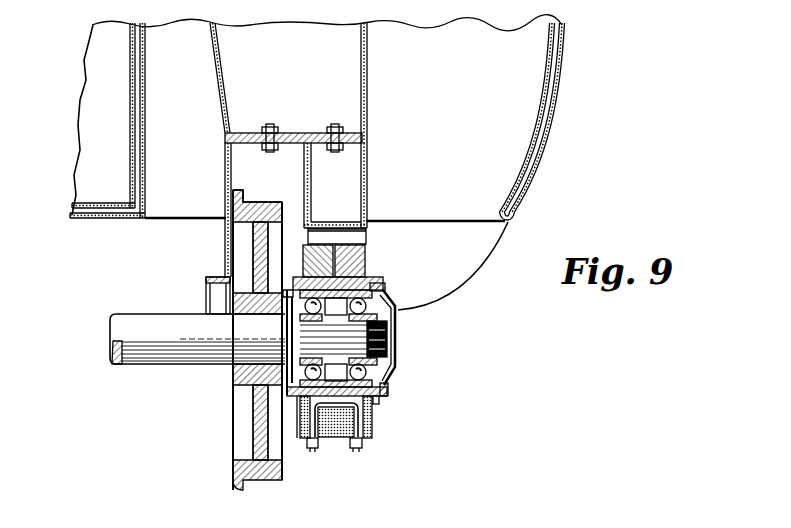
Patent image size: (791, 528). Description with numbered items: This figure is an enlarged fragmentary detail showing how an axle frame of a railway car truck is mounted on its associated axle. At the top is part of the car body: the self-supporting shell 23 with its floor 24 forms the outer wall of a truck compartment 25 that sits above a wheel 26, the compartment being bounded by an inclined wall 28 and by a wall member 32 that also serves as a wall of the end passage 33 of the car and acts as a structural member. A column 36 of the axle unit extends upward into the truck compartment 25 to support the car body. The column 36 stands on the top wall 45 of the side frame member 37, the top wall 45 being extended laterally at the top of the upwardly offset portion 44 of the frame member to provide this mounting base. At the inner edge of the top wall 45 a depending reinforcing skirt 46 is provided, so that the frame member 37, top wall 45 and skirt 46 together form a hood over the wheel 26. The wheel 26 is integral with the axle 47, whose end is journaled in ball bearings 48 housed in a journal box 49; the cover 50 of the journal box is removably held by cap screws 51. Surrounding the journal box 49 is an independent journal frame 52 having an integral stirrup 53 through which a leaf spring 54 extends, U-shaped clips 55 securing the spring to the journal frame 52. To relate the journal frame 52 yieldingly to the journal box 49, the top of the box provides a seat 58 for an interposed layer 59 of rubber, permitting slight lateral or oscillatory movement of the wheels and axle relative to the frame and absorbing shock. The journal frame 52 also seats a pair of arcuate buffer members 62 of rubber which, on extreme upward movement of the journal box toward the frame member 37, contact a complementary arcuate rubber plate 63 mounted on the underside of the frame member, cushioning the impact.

The self-supporting shell 23 is at (572, 42).
The floor 24 is at (87, 202).
The truck compartment 25 is at (512, 110).
The wheel 26 is at (234, 468).
The inclined wall 28 is at (512, 68).
The wall member 32 is at (147, 80).
The end passage 33 is at (107, 112).
The column 36 is at (368, 65).
The side frame member 37 is at (370, 175).
The upwardly offset portion 44 is at (380, 142).
The top wall 45 is at (296, 135).
The reinforcing skirt 46 is at (226, 190).
The axle 47 is at (170, 343).
The ball bearing 48 is at (389, 333).
The journal box 49 is at (378, 399).
The cover 50 is at (397, 348).
The cap screw 51 is at (393, 389).
The journal frame 52 is at (372, 252).
The stirrup 53 is at (371, 437).
The leaf spring 54 is at (341, 440).
The U-shaped clip 55 is at (313, 425).
The seat 58 is at (372, 266).
The layer of rubber 59 is at (384, 292).
The arcuate buffer member 62 is at (331, 245).
The arcuate rubber plate 63 is at (362, 233).